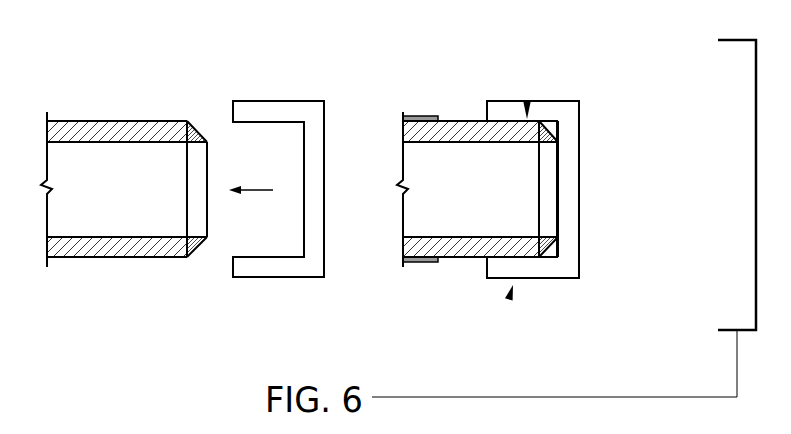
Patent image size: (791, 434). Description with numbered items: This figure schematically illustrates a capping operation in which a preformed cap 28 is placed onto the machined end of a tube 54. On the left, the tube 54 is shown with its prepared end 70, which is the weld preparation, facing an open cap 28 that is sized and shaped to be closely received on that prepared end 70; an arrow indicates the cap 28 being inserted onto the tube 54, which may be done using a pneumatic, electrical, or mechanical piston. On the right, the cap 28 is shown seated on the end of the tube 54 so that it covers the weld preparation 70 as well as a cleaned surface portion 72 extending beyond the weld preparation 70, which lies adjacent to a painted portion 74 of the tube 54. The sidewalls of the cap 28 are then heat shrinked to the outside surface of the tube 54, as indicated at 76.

The preformed cap 28 is at (293, 101).
The tube 54 is at (138, 128).
The prepared end 70 is at (197, 132).
The cleaned surface portion 72 is at (528, 100).
The painted portion 74 is at (432, 116).
The heat shrink location 76 is at (508, 302).